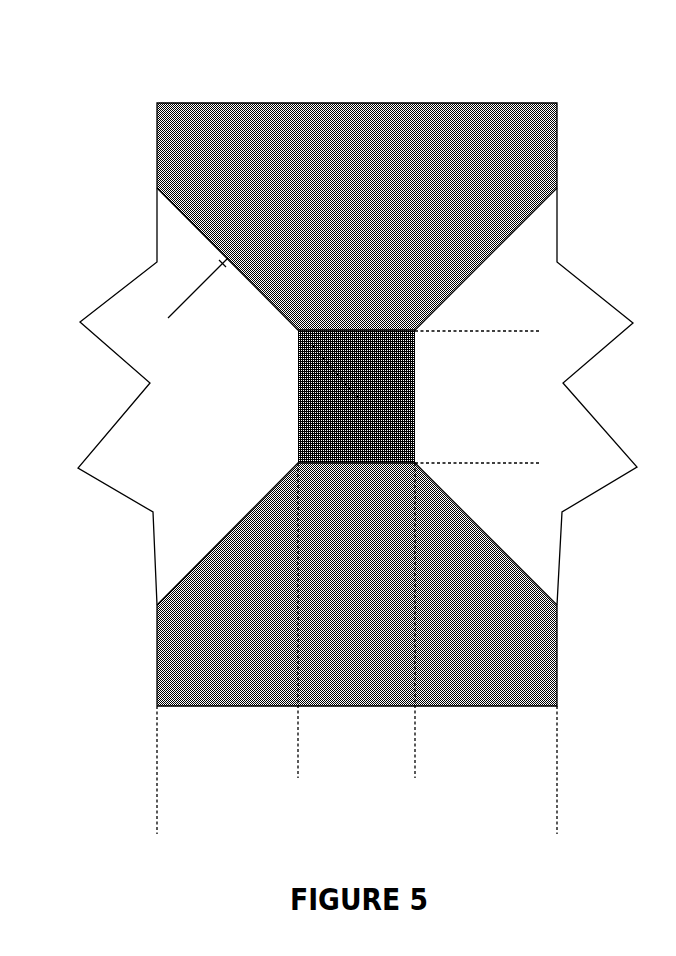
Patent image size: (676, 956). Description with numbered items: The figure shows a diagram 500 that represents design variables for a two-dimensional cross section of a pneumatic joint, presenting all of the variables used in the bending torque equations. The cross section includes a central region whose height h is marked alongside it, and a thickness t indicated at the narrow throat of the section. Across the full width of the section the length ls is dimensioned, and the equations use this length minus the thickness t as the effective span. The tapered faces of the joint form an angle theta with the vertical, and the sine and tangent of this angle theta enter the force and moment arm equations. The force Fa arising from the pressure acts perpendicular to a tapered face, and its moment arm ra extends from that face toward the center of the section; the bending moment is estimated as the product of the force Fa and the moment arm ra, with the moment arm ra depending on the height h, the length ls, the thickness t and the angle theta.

The diagram 500 is at (50, 121).
The height variable h is at (533, 461).
The thickness variable t is at (299, 777).
The length variable ls is at (158, 833).
The force from pressure Fa is at (243, 340).
The moment arm ra is at (322, 420).
The angle theta is at (298, 530).